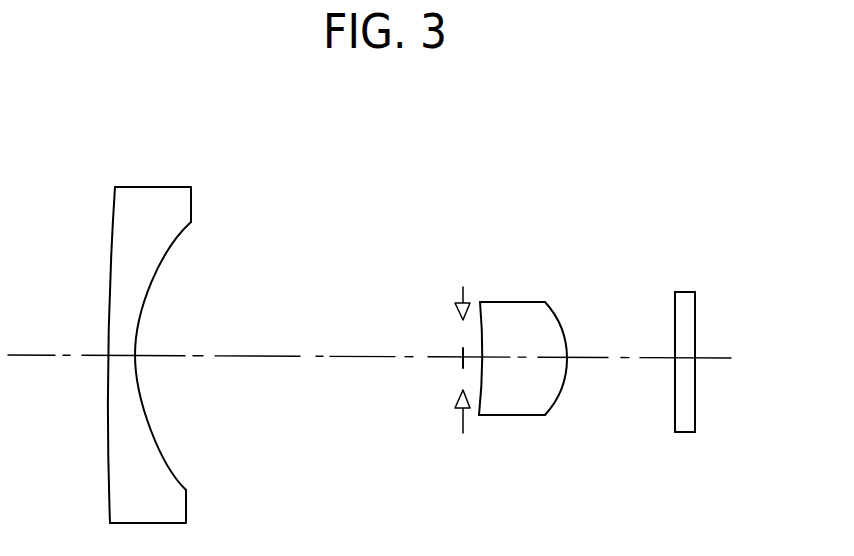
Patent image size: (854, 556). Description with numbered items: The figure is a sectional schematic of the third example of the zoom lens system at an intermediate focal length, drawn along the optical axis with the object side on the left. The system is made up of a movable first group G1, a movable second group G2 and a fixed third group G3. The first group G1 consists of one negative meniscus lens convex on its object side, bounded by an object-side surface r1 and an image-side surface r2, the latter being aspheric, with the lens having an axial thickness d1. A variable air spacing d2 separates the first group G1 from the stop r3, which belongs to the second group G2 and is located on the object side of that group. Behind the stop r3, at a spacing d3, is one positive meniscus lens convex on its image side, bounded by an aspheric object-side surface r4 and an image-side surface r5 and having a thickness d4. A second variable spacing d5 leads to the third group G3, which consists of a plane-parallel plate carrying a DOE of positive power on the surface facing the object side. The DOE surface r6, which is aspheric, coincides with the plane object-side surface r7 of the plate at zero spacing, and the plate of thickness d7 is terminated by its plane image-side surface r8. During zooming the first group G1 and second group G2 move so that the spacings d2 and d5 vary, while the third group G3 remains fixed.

The first group G1 is at (193, 132).
The second group G2 is at (560, 135).
The third group G3 is at (708, 137).
The radius of curvature of lens surface r1 is at (110, 243).
The radius of curvature of lens surface r2 is at (173, 243).
The stop r3 is at (462, 335).
The radius of curvature of lens surface r4 is at (481, 338).
The radius of curvature of lens surface r5 is at (557, 320).
The radius of curvature of lens surface r6 is at (672, 312).
The radius of curvature of lens surface r7 is at (718, 306).
The radius of curvature of lens surface r8 is at (697, 312).
The spacing between adjacent lens surfaces d1 is at (120, 357).
The spacing between adjacent lens surfaces d2 is at (316, 378).
The spacing between adjacent lens surfaces d3 is at (475, 362).
The spacing between adjacent lens surfaces d4 is at (520, 380).
The spacing between adjacent lens surfaces d5 is at (621, 381).
The spacing between adjacent lens surfaces d7 is at (686, 360).